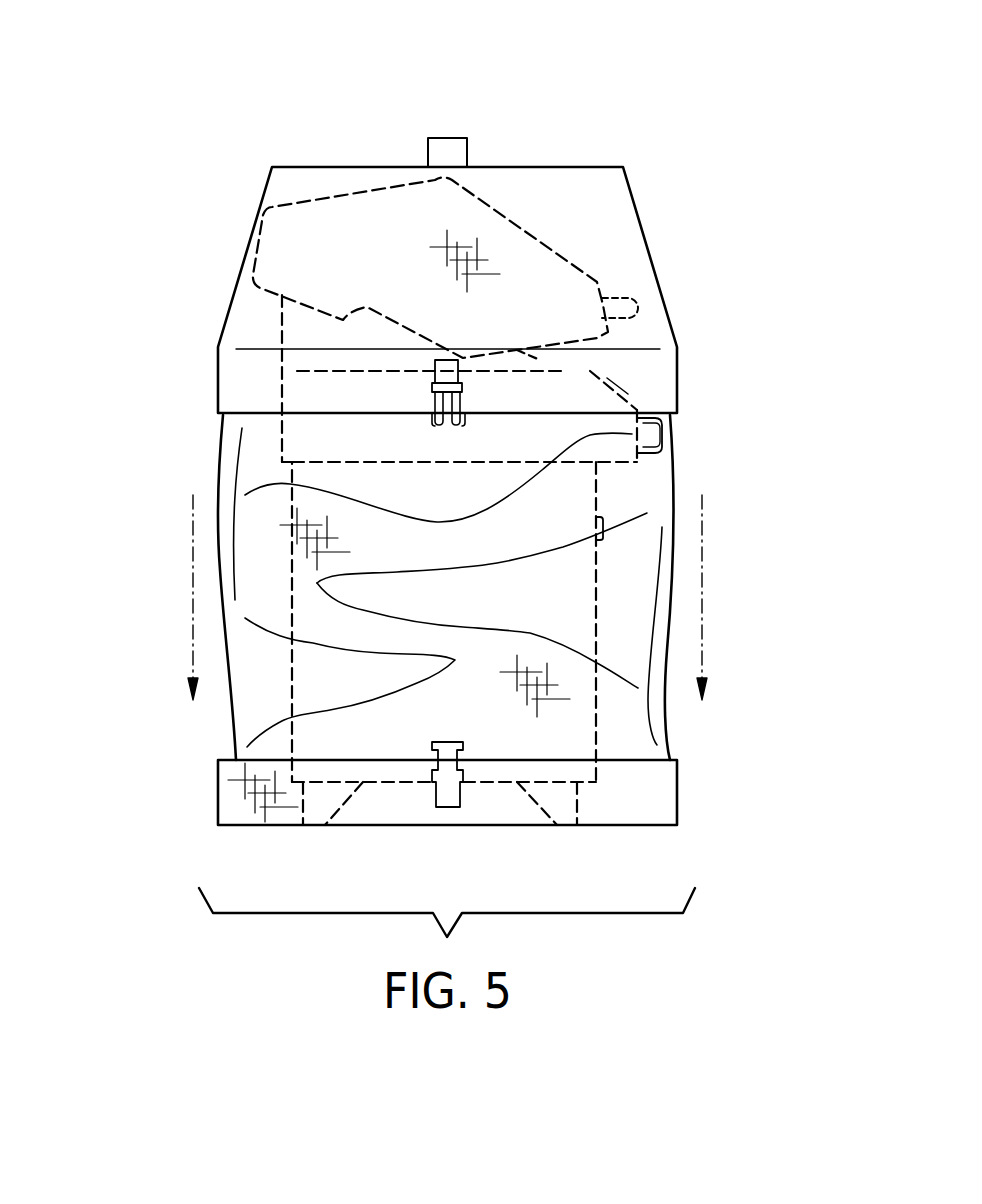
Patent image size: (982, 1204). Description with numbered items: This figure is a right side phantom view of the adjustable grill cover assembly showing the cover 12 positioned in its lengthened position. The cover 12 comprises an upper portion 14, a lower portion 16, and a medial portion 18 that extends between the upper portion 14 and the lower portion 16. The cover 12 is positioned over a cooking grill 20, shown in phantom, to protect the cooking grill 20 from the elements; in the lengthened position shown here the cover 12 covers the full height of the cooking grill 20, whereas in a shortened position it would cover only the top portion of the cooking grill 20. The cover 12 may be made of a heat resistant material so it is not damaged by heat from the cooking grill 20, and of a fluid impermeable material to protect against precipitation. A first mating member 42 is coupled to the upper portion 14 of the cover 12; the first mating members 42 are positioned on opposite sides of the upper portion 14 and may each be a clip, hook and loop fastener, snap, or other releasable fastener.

The cover 12 is at (461, 441).
The upper portion 14 is at (228, 232).
The lower portion 16 is at (692, 795).
The medial portion 18 is at (690, 523).
The cooking grill 20 is at (548, 247).
The first mating member 42 is at (440, 367).